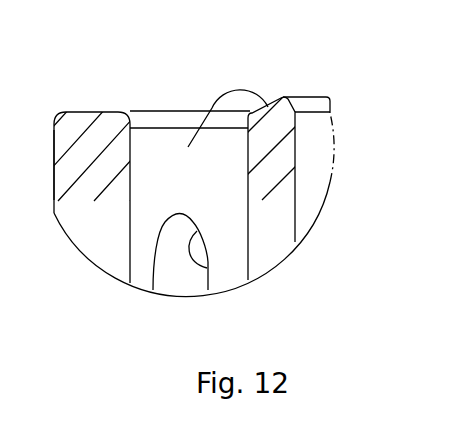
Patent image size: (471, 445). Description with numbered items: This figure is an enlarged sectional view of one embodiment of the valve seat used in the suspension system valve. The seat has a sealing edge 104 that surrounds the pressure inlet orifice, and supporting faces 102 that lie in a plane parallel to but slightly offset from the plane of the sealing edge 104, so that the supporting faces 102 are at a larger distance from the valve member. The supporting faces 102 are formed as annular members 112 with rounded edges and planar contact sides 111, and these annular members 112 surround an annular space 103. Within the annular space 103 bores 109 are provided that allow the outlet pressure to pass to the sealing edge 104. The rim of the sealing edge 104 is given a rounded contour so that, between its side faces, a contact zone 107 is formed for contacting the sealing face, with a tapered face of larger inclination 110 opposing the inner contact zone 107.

The supporting faces 102 is at (135, 111).
The annular space 103 is at (157, 197).
The sealing edge 104 is at (305, 98).
The contact zone 107 is at (282, 98).
The bores 109 is at (207, 267).
The tapered face with larger inclination 110 is at (219, 135).
The planar contact sides 111 is at (100, 111).
The annular members 112 is at (92, 182).